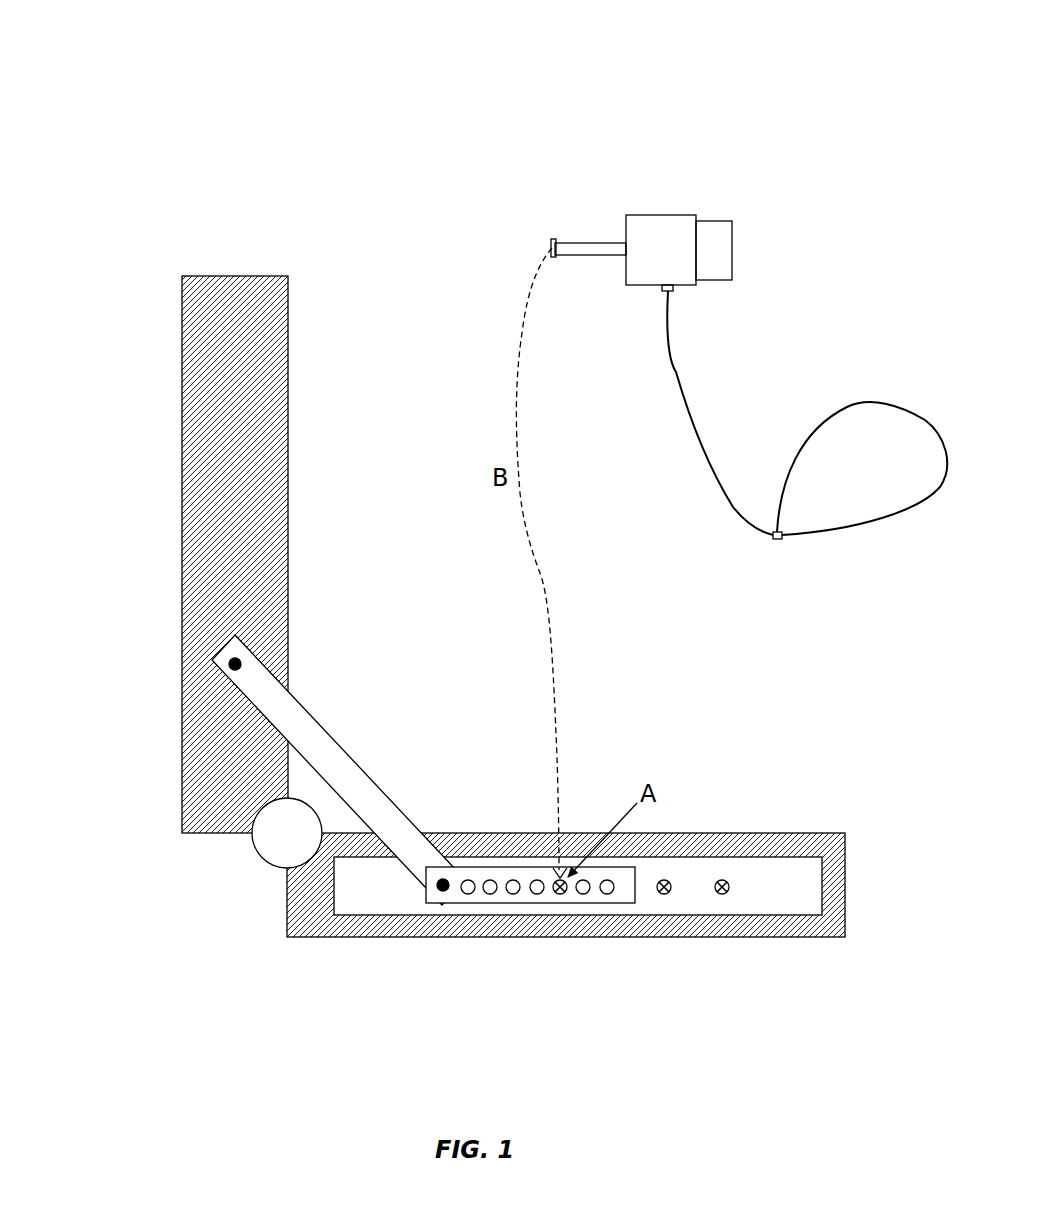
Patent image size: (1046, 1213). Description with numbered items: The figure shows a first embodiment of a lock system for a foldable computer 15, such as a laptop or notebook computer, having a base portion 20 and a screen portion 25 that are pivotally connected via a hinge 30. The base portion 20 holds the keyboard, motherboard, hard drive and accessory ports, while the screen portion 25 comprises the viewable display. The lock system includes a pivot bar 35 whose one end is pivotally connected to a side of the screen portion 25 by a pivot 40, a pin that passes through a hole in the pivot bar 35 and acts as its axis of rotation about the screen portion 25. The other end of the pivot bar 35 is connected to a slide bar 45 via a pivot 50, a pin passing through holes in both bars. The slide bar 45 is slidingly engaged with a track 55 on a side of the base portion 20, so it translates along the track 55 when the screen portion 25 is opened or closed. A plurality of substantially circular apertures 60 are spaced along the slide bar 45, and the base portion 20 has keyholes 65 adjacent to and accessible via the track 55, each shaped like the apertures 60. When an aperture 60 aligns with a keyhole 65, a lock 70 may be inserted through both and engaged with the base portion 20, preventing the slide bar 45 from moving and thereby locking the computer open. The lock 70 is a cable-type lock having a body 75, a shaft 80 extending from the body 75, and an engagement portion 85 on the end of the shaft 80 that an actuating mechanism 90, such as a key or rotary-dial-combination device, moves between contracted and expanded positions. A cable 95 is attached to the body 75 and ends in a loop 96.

The foldable computer 15 is at (147, 267).
The base portion 20 is at (533, 937).
The screen portion 25 is at (182, 383).
The hinge 30 is at (268, 856).
The pivot bar 35 is at (228, 680).
The pivot 40 is at (231, 662).
The slide bar 45 is at (456, 903).
The pivot 50 is at (440, 903).
The track 55 is at (360, 915).
The apertures 60 is at (519, 893).
The keyhole 65 is at (566, 891).
The lock 70 is at (847, 95).
The body 75 is at (667, 215).
The shaft 80 is at (595, 243).
The engagement portion 85 is at (550, 238).
The actuating mechanism 90 is at (715, 221).
The cable 95 is at (683, 382).
The loop 96 is at (880, 397).